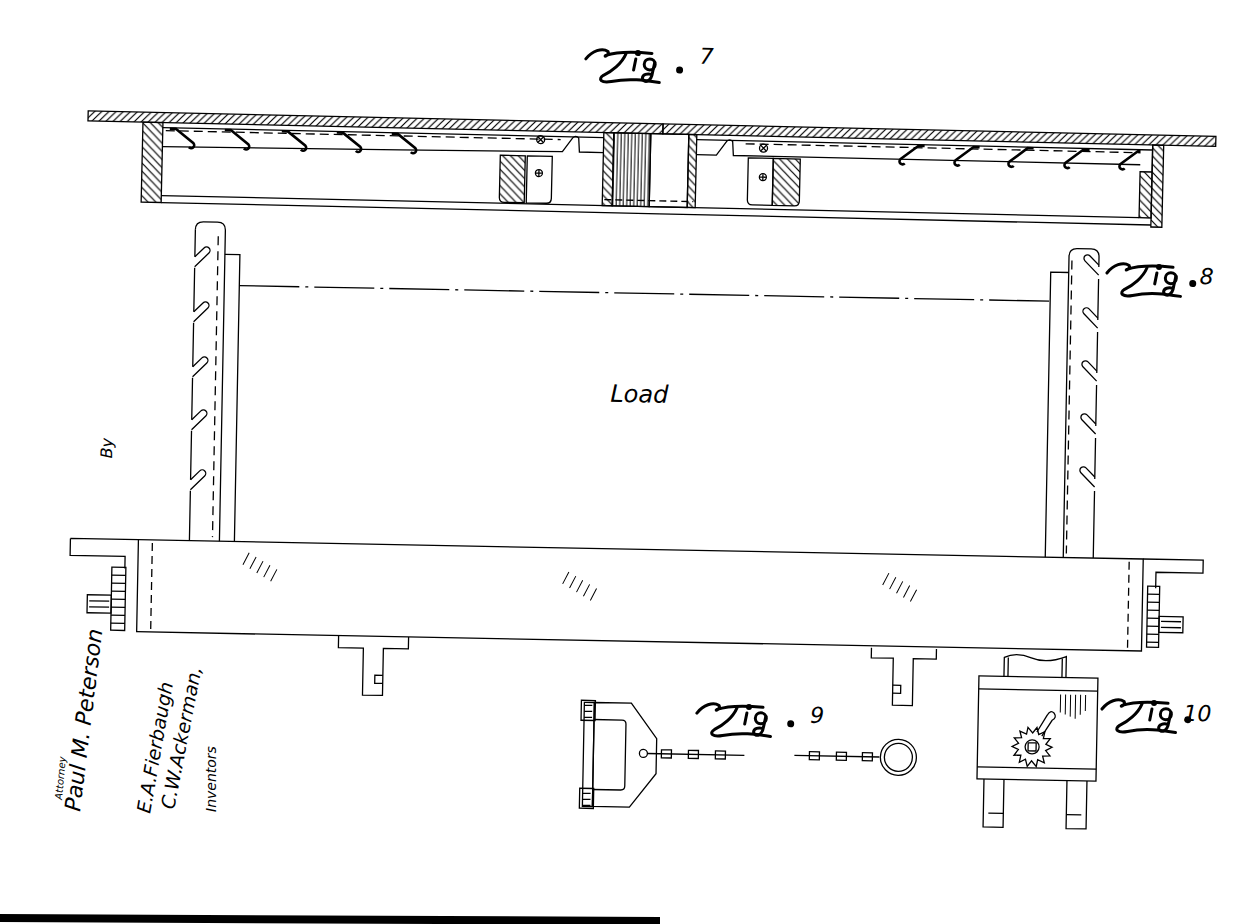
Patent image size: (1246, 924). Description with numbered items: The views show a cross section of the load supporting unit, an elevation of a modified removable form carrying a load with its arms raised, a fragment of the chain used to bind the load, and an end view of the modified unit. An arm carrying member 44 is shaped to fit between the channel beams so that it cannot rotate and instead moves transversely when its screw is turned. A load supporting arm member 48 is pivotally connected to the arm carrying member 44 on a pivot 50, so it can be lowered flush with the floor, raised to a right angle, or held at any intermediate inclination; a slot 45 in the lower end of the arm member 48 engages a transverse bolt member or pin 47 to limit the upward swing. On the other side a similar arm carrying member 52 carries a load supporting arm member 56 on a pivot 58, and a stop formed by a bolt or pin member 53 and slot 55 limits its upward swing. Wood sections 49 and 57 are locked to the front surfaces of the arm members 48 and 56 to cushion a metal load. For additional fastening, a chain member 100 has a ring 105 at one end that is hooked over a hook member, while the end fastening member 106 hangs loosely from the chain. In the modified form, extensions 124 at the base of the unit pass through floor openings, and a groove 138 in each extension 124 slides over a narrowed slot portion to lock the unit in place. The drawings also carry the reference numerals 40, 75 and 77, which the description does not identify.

In FIG. 10, the ratchet wheel 40 is at (1046, 739).
In FIG. 7, the arm carrying member 44 is at (520, 206).
In FIG. 7, the slot 45 is at (578, 152).
In FIG. 7, the transverse bolt member or pin 47 is at (543, 181).
In FIG. 7, the load supporting arm member 48 is at (455, 132).
In FIG. 8, the load supporting arm member 48 is at (191, 243).
In FIG. 10, the load supporting arm member 48 is at (1072, 660).
In FIG. 7, the wood section 49 is at (303, 126).
In FIG. 7, the pivot 50 is at (543, 138).
In FIG. 7, the arm carrying member 52 is at (801, 184).
In FIG. 7, the bolt or pin member 53 is at (764, 179).
In FIG. 7, the slot 55 is at (726, 150).
In FIG. 7, the load supporting arm member 56 is at (850, 124).
In FIG. 8, the load supporting arm member 56 is at (1070, 254).
In FIG. 7, the wood section 57 is at (902, 128).
In FIG. 7, the pivot 58 is at (766, 141).
In FIG. 7, the right hooks 75 is at (1062, 155).
In FIG. 7, the left hooks 77 is at (346, 159).
In FIG. 9, the chain member 100 is at (727, 755).
In FIG. 9, the ring 105 is at (908, 768).
In FIG. 9, the end fastening member 106 is at (645, 720).
In FIG. 8, the extensions 124 is at (372, 674).
In FIG. 10, the extensions 124 is at (1094, 792).
In FIG. 8, the groove 138 is at (390, 684).
In FIG. 10, the groove 138 is at (1082, 807).